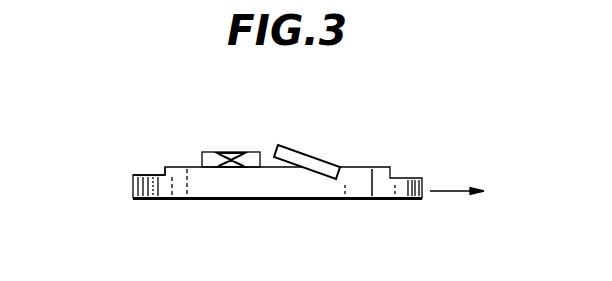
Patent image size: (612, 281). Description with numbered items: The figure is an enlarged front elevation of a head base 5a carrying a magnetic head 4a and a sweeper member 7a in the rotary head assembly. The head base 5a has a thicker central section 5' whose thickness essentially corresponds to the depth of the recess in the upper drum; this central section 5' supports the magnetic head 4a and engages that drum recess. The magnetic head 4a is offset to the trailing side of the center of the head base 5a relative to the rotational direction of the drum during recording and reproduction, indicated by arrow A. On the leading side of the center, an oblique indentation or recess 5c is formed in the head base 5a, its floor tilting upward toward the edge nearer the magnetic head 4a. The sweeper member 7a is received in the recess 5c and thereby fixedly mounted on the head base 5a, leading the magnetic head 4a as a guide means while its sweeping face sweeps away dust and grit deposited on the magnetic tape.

The thicker central section 5' is at (137, 144).
The head base 5a is at (202, 190).
The oblique recess 5c is at (322, 172).
The magnetic head 4a is at (229, 154).
The sweeper member 7a is at (314, 151).
The direction of movement A is at (457, 179).